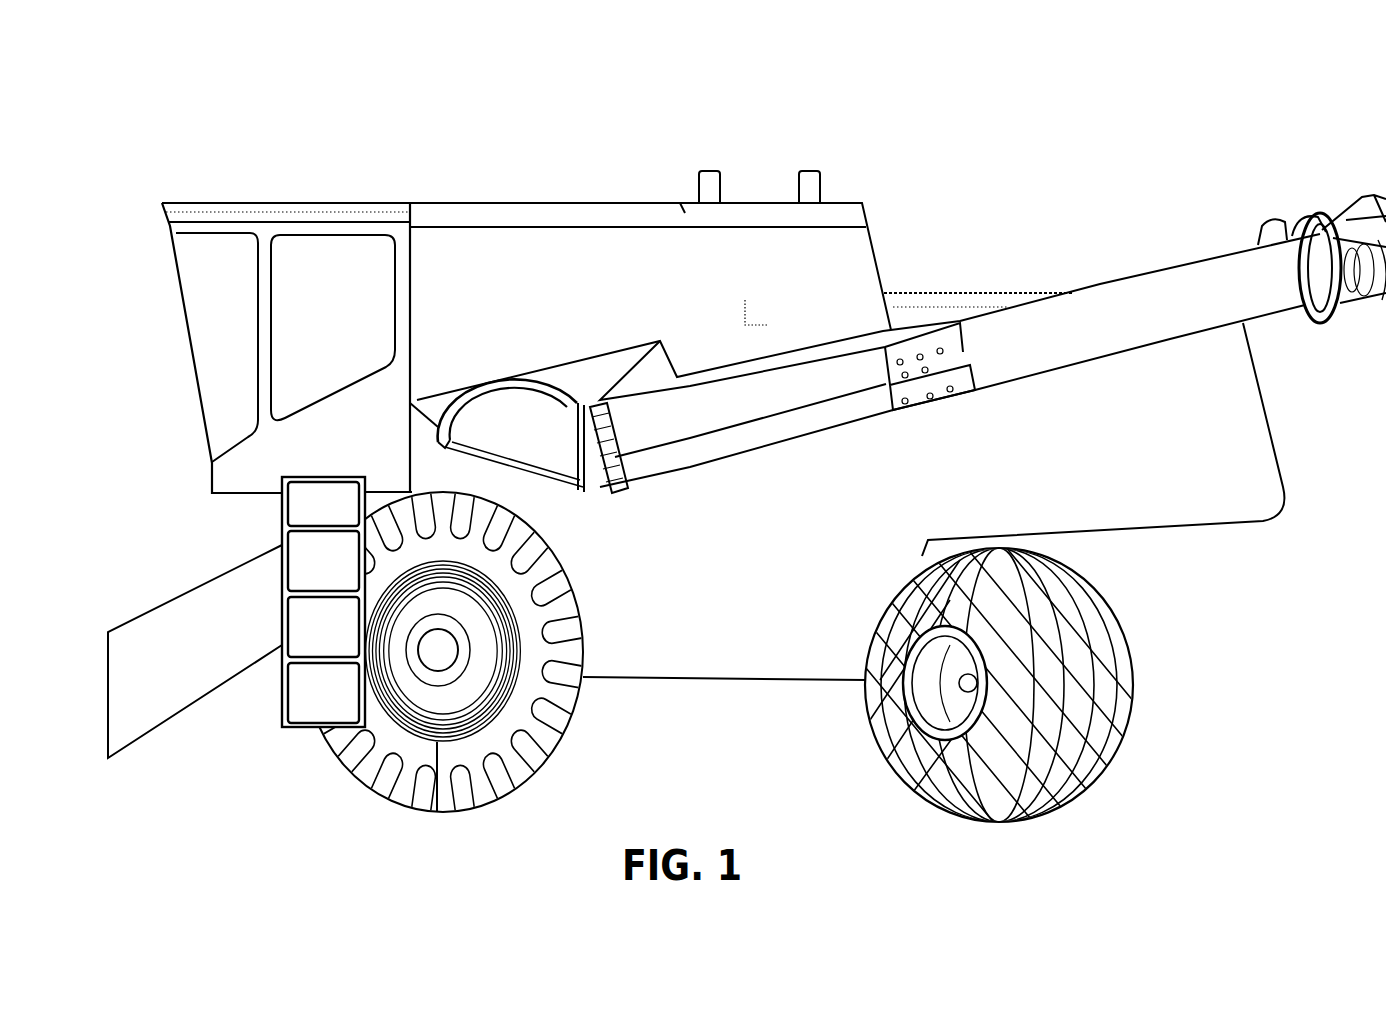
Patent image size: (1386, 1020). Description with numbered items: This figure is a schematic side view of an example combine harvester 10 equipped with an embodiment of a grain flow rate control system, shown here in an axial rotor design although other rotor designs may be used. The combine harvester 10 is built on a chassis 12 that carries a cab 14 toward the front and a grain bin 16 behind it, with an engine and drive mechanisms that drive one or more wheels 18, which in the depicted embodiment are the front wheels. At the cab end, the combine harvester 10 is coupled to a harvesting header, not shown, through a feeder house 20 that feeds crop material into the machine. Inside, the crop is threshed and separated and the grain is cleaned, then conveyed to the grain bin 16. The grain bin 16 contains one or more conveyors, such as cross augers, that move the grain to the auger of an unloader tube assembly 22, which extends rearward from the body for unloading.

The combine harvester 10 is at (203, 103).
The chassis 12 is at (713, 678).
The cab 14 is at (363, 200).
The grain bin 16 is at (508, 200).
The wheels 18 is at (562, 715).
The feeder house 20 is at (196, 700).
The unloader tube assembly 22 is at (1103, 409).